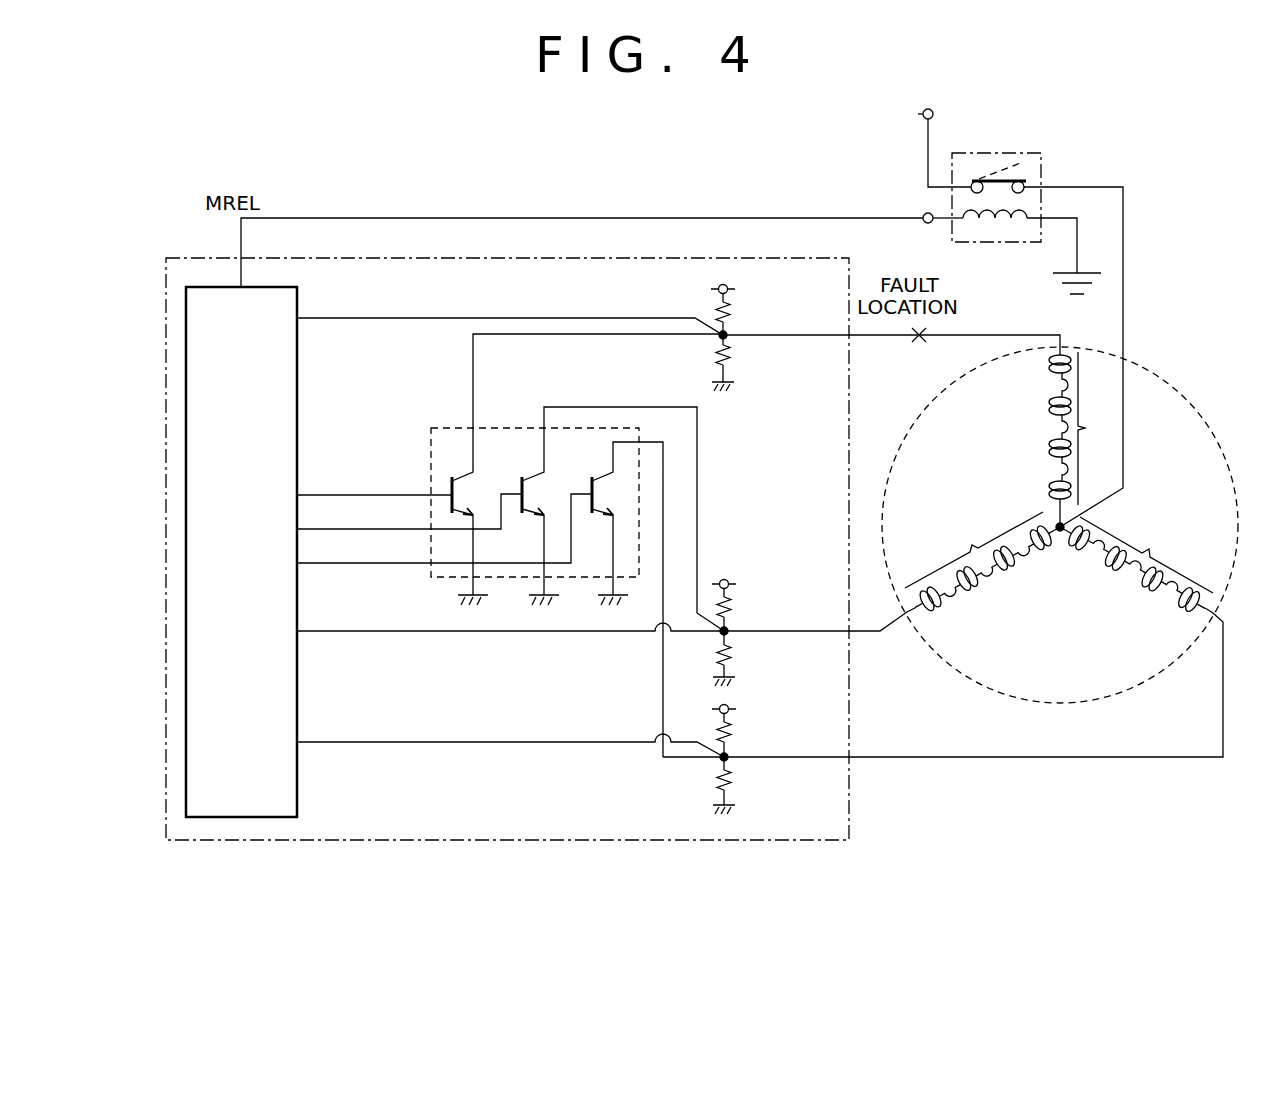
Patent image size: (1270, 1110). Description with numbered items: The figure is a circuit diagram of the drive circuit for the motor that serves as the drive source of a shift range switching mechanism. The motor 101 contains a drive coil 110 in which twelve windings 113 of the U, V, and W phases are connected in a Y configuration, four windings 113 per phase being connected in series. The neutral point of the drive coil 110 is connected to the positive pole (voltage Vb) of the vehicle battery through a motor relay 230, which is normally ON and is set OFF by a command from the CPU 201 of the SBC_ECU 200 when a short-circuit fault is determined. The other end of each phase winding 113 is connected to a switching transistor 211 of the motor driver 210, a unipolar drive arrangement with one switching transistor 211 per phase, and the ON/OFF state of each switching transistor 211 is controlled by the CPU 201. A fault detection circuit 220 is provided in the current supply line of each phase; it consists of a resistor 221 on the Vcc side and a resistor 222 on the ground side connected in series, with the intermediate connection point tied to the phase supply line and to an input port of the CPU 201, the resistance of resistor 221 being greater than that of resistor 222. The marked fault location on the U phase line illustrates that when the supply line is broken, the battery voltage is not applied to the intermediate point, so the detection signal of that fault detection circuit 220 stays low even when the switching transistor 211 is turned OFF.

The motor 101 is at (1145, 350).
The drive coil 110 is at (1083, 495).
The winding 113 is at (1047, 482).
The SBC_ECU 200 is at (462, 841).
The CPU 201 is at (292, 802).
The motor driver 210 is at (462, 428).
The switching transistor 211 is at (596, 485).
The fault detection circuit 220 is at (718, 542).
The resistor 221 is at (716, 312).
The resistor 222 is at (733, 356).
The motor relay 230 is at (995, 153).